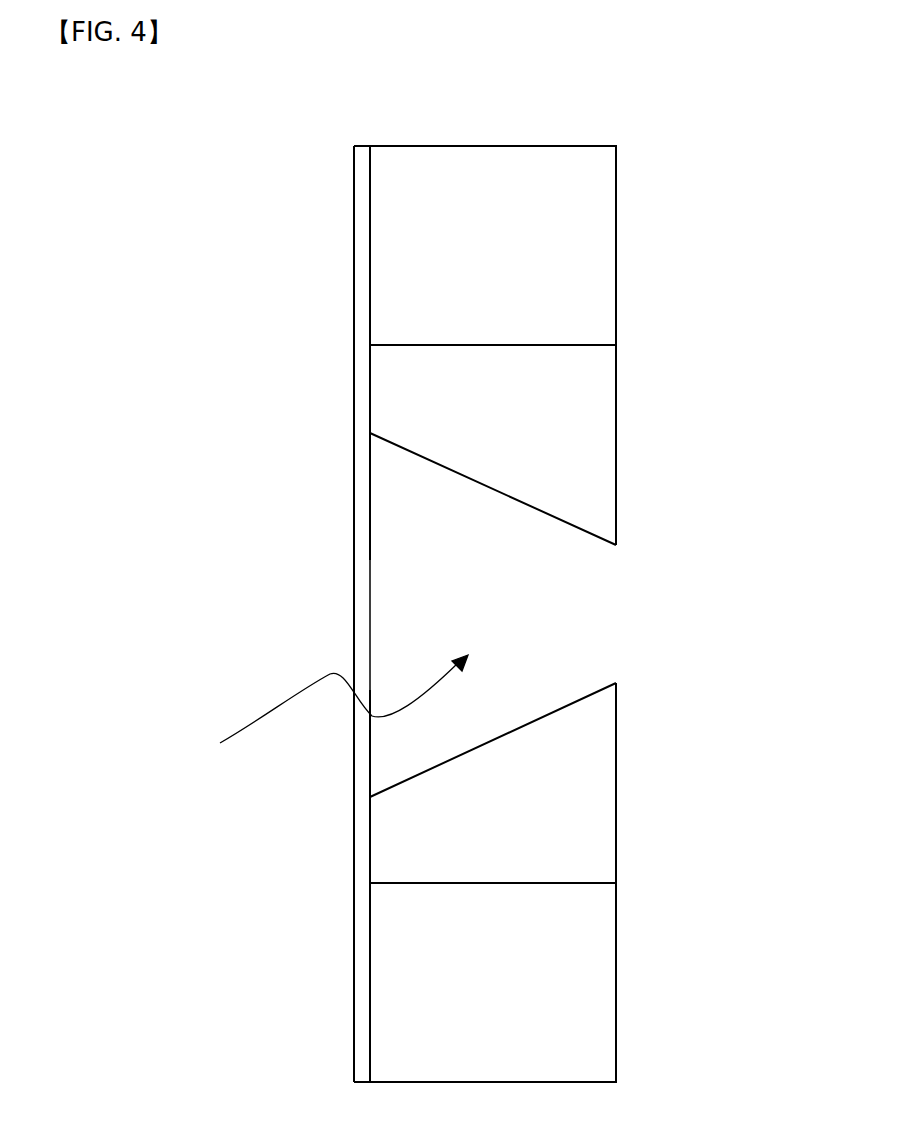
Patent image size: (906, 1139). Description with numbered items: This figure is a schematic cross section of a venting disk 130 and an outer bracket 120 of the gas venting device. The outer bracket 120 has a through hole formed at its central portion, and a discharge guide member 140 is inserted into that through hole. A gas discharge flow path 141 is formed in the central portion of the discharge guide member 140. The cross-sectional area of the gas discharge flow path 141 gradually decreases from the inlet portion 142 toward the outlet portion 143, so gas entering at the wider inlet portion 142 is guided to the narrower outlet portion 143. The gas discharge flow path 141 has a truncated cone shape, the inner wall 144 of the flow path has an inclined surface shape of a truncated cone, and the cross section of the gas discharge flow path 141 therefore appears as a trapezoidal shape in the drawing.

The outer bracket 120 is at (597, 233).
The venting disk 130 is at (354, 290).
The discharge guide member 140 is at (575, 418).
The gas discharge flow path 141 is at (313, 710).
The inlet portion 142 is at (394, 592).
The outlet portion 143 is at (610, 608).
The inner wall 144 is at (527, 725).